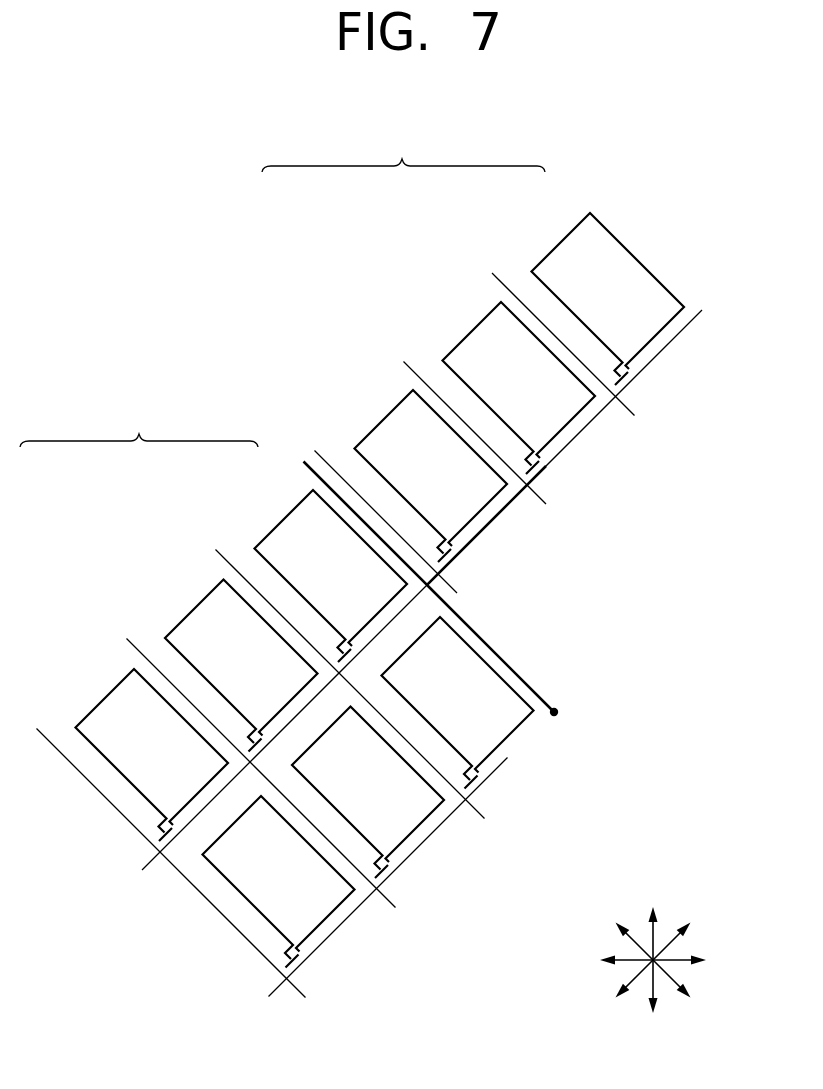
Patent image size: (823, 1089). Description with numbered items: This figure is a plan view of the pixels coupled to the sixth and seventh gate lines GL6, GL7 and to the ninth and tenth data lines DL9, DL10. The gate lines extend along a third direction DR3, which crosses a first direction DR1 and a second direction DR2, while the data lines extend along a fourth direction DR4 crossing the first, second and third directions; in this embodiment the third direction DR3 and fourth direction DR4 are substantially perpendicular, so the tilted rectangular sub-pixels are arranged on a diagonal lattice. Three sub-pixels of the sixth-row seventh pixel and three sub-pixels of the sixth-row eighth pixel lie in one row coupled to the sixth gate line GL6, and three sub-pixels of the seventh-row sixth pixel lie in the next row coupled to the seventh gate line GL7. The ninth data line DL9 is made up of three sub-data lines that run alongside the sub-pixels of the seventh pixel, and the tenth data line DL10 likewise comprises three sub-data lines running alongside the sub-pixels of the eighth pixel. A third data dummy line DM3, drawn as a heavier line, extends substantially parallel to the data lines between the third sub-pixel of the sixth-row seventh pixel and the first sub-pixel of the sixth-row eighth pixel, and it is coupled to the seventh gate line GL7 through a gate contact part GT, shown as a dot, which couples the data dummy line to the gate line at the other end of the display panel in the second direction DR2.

The tenth data line DL10 is at (403, 151).
The ninth data line DL9 is at (139, 426).
The sixth gate line GL6 is at (677, 338).
The seventh gate line GL7 is at (507, 760).
The third data dummy line DM3 is at (519, 677).
The gate contact part GT is at (558, 712).
The first direction DR1 is at (652, 948).
The second direction DR2 is at (675, 960).
The third direction DR3 is at (663, 948).
The fourth direction DR4 is at (642, 948).